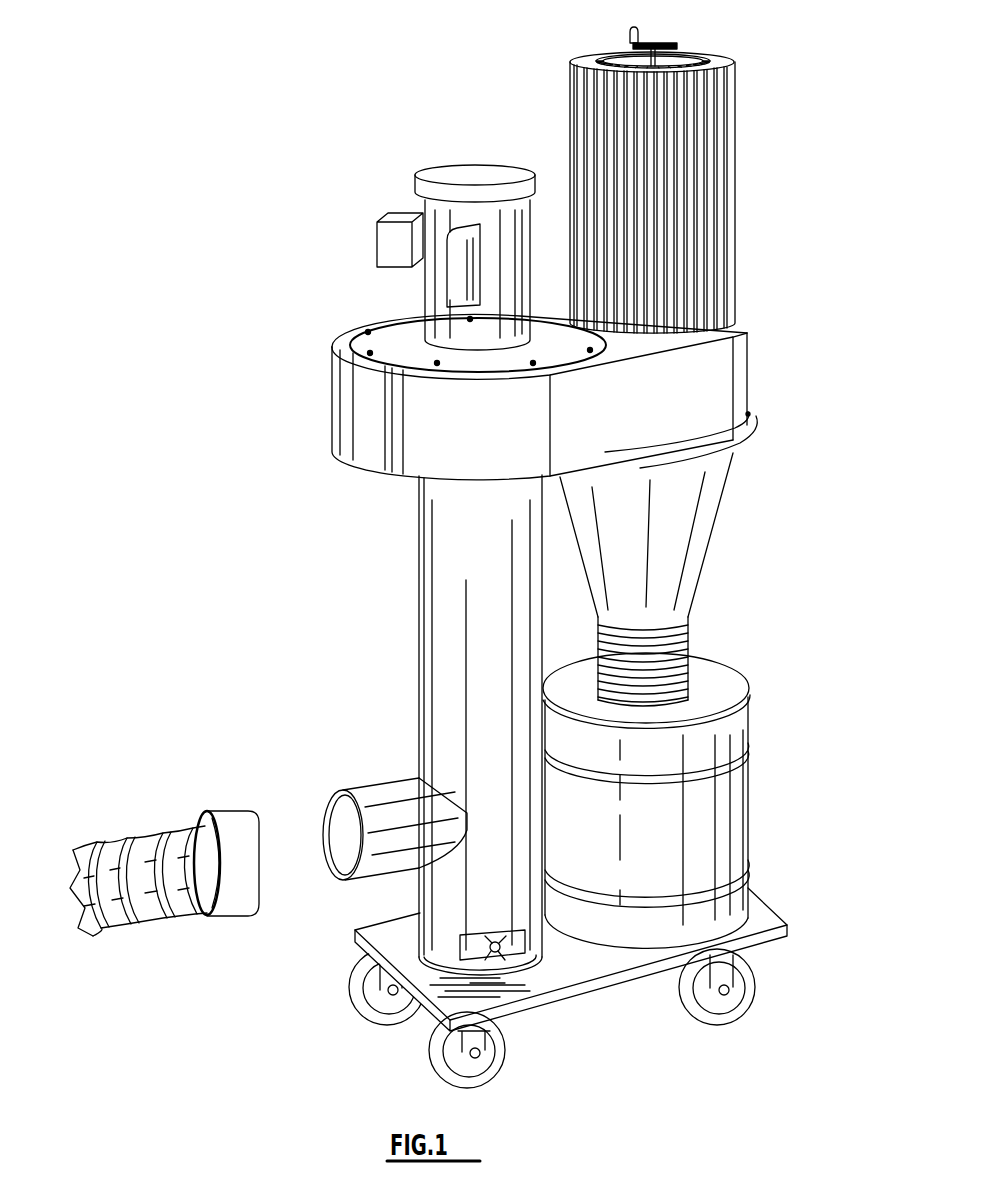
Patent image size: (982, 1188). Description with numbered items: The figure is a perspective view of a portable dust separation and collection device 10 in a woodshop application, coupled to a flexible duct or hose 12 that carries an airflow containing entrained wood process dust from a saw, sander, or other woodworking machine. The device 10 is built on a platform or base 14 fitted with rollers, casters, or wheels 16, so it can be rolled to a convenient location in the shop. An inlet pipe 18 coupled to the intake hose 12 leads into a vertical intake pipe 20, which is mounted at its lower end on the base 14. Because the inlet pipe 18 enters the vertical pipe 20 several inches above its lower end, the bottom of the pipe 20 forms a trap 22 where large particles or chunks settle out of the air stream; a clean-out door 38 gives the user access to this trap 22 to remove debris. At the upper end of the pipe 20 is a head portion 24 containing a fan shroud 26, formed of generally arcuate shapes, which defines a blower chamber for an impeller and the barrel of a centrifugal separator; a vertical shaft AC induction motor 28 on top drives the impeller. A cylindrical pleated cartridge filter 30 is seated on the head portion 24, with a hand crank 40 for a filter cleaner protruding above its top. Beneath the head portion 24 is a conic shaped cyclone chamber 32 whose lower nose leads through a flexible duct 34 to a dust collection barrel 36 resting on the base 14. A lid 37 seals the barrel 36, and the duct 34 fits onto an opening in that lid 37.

The portable dust separation and collection device 10 is at (408, 602).
The flexible duct or hose 12 is at (160, 827).
The platform or base 14 is at (753, 910).
The rollers, casters, or wheels 16 is at (430, 1062).
The inlet pipe 18 is at (382, 790).
The vertical intake pipe 20 is at (431, 561).
The trap 22 is at (433, 908).
The head portion 24 is at (325, 393).
The fan shroud 26 is at (334, 383).
The vertical shaft AC induction motor 28 is at (430, 303).
The cylindrical pleated cartridge filter 30 is at (750, 258).
The conic shaped cyclone chamber 32 is at (714, 524).
The flexible duct 34 is at (686, 675).
The dust collection barrel 36 is at (743, 802).
The lid 37 is at (730, 693).
The clean-out door 38 is at (487, 938).
The hand crank 40 is at (663, 43).